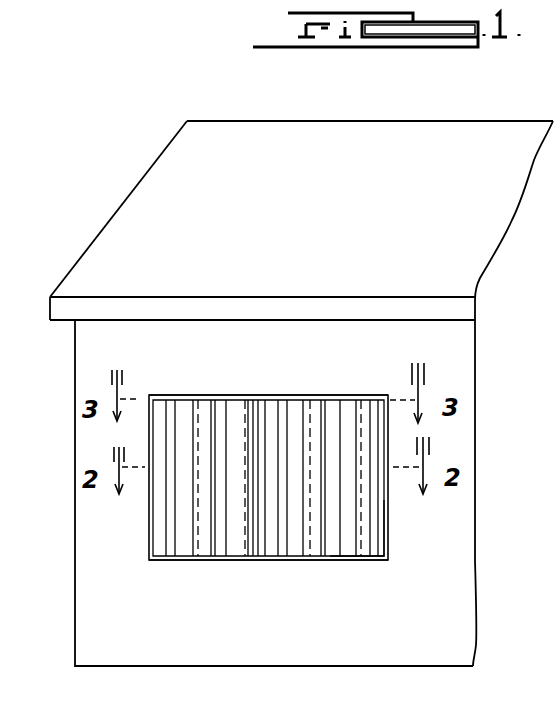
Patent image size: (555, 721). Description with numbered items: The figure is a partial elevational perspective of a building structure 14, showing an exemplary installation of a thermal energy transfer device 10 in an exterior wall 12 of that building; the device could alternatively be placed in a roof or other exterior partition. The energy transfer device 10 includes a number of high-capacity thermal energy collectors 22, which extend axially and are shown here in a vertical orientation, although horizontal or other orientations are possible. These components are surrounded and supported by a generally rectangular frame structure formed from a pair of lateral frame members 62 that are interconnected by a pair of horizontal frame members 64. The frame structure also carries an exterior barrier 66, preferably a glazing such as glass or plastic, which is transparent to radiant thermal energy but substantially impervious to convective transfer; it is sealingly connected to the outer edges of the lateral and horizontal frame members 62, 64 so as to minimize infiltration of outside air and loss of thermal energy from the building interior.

The energy transfer device 10 is at (146, 570).
The exterior wall 12 is at (432, 616).
The building structure 14 is at (72, 356).
The thermal energy collectors 22 is at (188, 435).
The lateral frame members 62 is at (149, 522).
The horizontal frame members 64 is at (152, 397).
The exterior barrier 66 is at (394, 519).